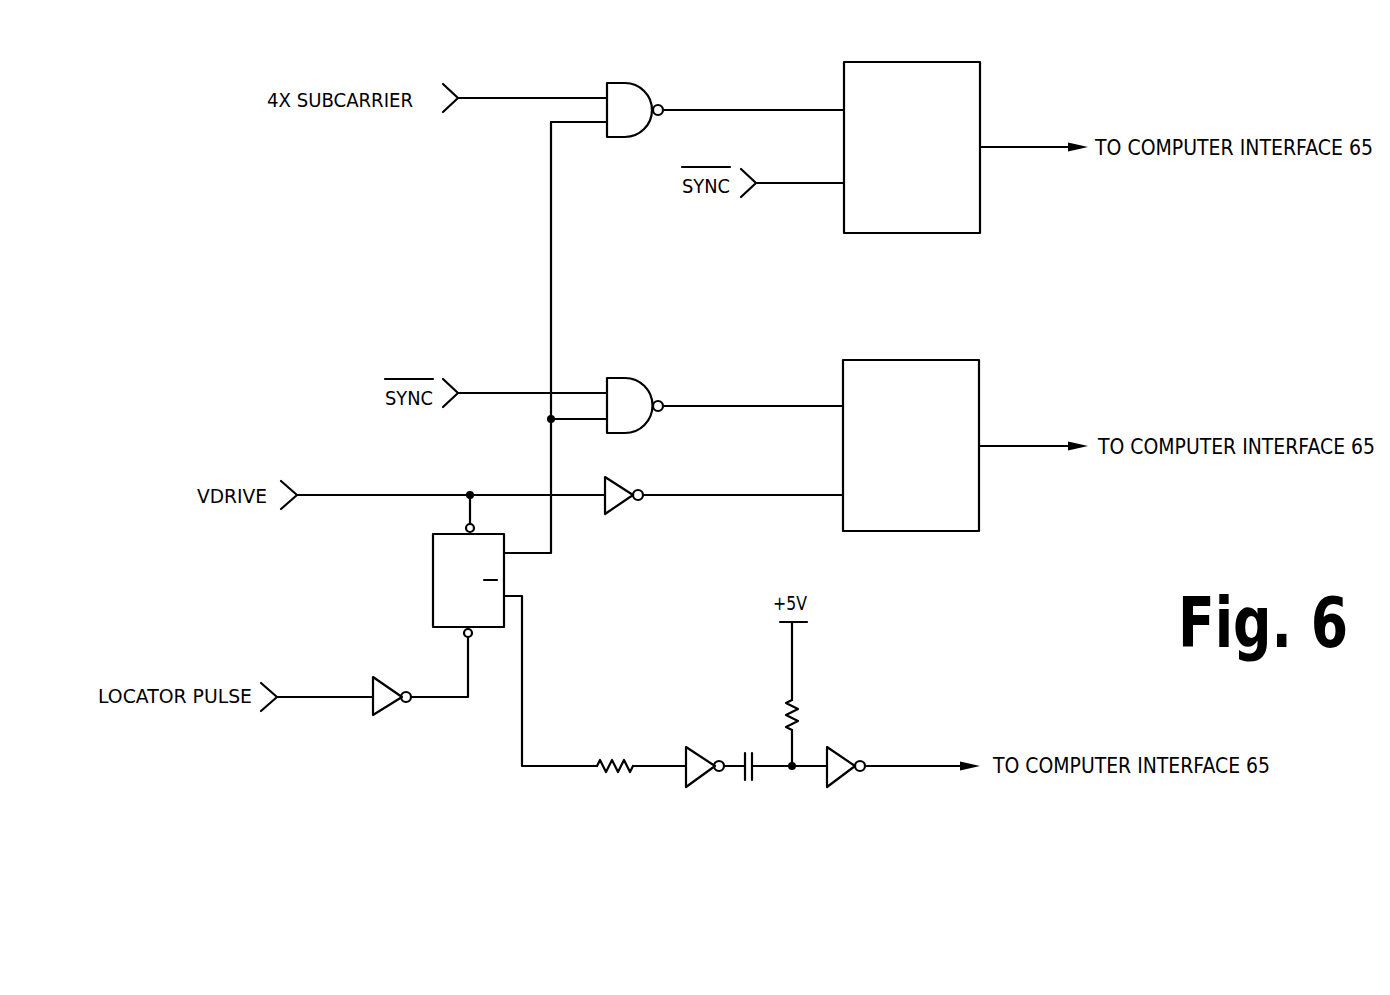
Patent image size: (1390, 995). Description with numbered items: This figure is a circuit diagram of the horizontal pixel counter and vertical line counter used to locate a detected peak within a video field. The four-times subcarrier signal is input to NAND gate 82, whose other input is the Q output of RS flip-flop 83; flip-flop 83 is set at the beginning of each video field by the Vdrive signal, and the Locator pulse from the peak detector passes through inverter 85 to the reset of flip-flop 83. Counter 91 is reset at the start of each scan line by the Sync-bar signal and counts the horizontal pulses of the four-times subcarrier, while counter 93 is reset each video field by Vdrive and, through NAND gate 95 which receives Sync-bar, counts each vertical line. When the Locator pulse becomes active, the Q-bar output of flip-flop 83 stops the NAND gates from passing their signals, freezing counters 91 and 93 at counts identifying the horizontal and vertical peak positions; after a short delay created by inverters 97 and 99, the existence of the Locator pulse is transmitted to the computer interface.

The NAND gate 82 is at (647, 90).
The counter 91 is at (980, 88).
The NAND gate 95 is at (635, 378).
The counter 93 is at (980, 381).
The RS flip-flop 83 is at (504, 574).
The inverter 85 is at (393, 703).
The inverter 97 is at (698, 747).
The inverter 99 is at (838, 753).